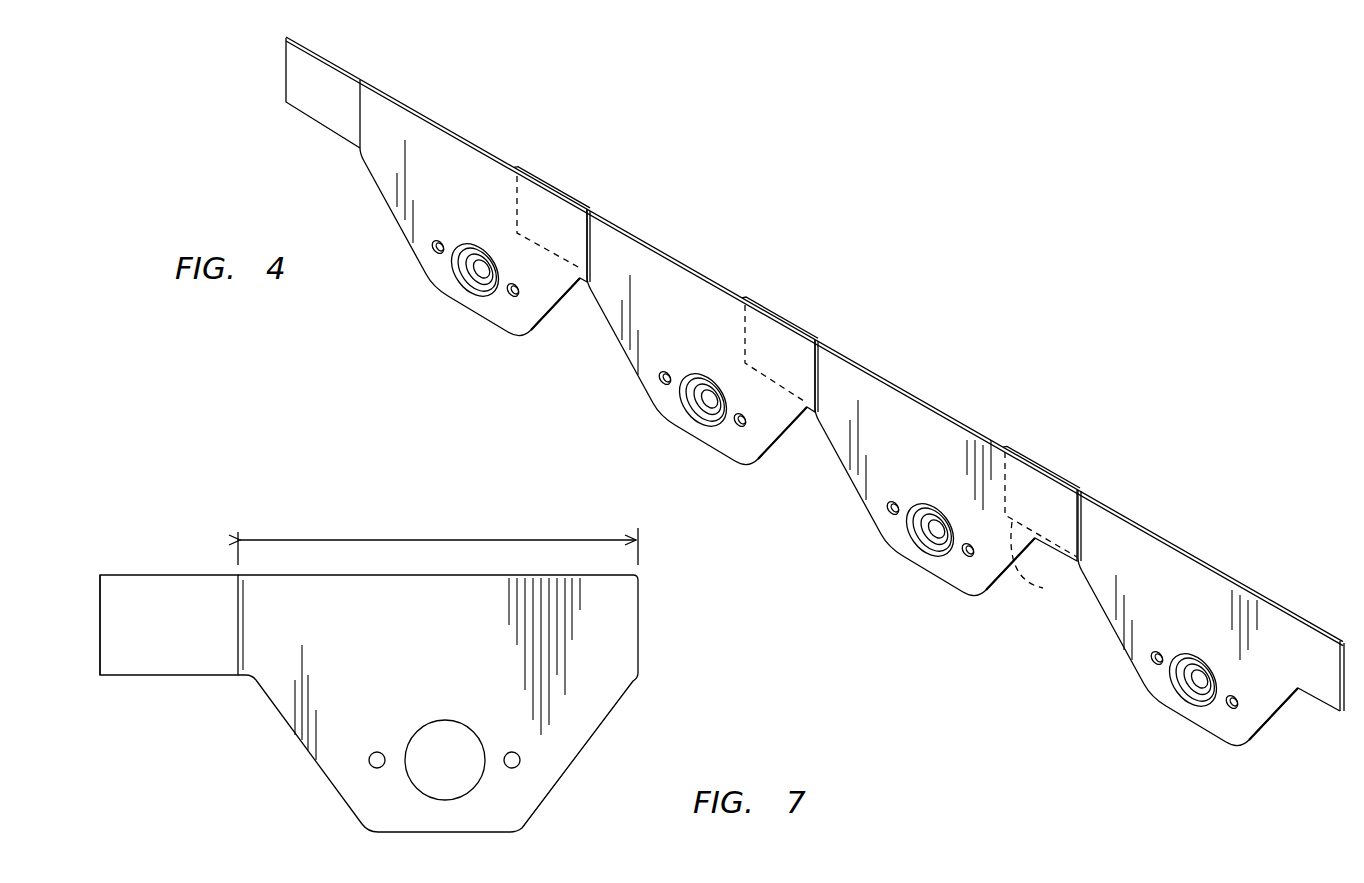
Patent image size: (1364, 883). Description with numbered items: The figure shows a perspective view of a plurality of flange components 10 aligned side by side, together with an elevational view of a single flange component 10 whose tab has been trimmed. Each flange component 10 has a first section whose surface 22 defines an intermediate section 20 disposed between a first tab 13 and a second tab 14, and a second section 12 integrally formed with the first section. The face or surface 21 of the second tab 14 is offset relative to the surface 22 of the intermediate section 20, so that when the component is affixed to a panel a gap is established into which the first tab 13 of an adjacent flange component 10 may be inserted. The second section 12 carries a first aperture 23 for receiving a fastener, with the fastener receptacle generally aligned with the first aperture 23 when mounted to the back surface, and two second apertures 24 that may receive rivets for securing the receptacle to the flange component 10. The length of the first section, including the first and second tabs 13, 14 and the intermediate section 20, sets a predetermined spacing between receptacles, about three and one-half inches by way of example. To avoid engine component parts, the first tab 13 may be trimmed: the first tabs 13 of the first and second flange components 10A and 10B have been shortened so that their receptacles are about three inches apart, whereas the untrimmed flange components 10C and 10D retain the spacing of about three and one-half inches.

In FIG. 7, the flange component 10 is at (187, 540).
In FIG. 4, the first flange component 10A is at (476, 119).
In FIG. 4, the second flange component 10B is at (700, 251).
In FIG. 4, the third flange component 10C is at (965, 404).
In FIG. 4, the fourth flange component 10D is at (1229, 556).
In FIG. 7, the second section 12 is at (568, 735).
In FIG. 4, the first tab 13 is at (582, 280).
In FIG. 7, the first tab 13 is at (632, 641).
In FIG. 4, the second tab 14 is at (322, 103).
In FIG. 7, the second tab 14 is at (175, 652).
In FIG. 7, the intermediate section 20 is at (440, 540).
In FIG. 7, the surface of the second tab 21 is at (169, 618).
In FIG. 4, the surface of the component 22 is at (461, 186).
In FIG. 7, the surface of the component 22 is at (400, 618).
In FIG. 4, the first aperture 23 is at (686, 411).
In FIG. 7, the first aperture 23 is at (436, 718).
In FIG. 4, the second apertures 24 is at (659, 381).
In FIG. 7, the second apertures 24 is at (368, 760).